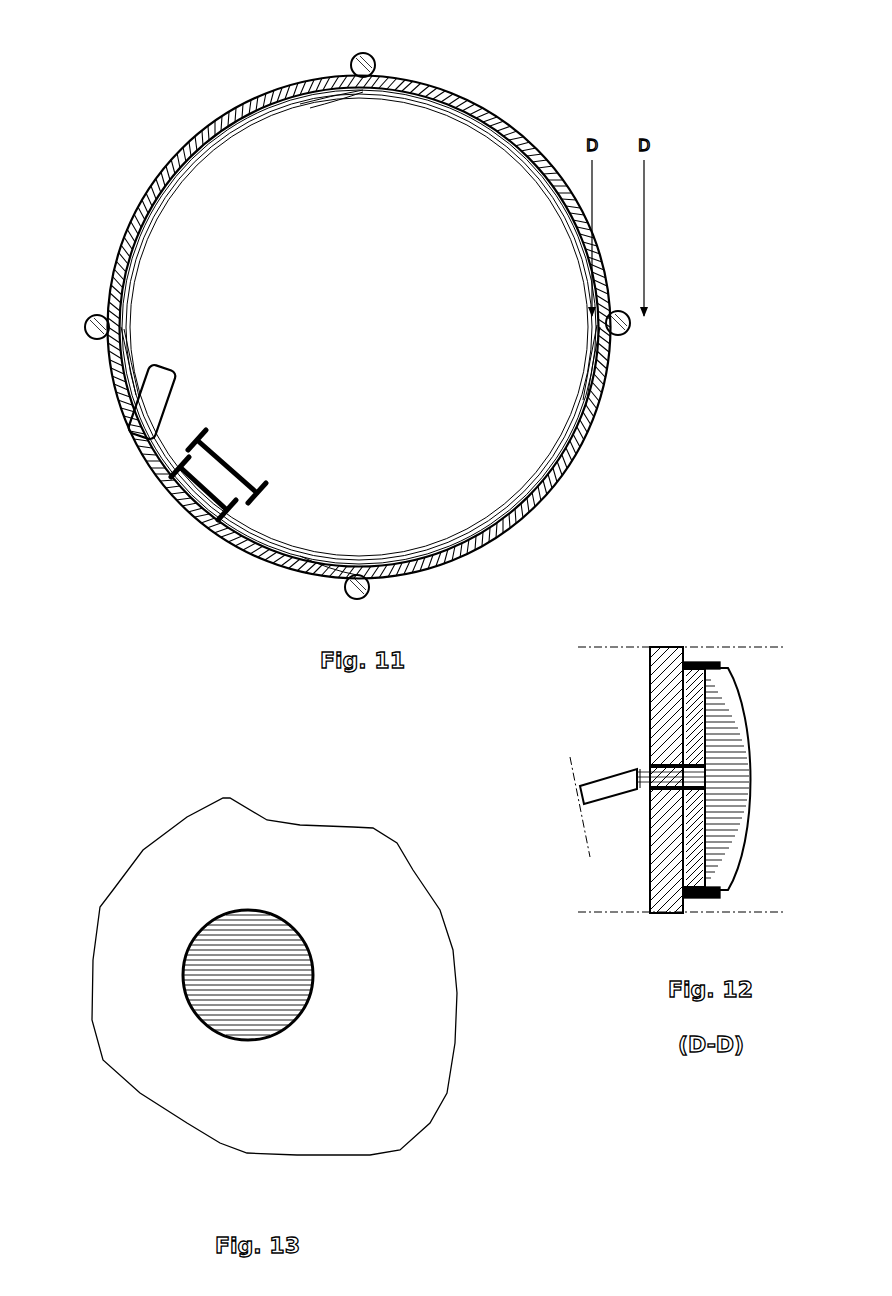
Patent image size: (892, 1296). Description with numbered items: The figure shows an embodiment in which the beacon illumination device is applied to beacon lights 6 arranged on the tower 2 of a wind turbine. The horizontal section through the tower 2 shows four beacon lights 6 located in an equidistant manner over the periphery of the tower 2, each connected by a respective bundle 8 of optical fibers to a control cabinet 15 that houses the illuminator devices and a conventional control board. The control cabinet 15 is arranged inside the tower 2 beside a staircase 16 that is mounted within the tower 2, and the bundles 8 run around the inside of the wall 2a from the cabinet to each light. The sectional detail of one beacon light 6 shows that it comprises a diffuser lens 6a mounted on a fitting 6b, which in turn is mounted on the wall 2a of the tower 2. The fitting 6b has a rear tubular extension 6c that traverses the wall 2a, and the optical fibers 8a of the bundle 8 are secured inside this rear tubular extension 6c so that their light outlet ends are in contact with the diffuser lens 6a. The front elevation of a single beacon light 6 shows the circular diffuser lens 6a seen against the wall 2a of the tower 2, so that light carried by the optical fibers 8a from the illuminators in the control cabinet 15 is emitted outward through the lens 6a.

In FIG. 11, the tower 2 is at (532, 111).
In FIG. 11, the wall 2a is at (180, 147).
In FIG. 12, the wall 2a is at (650, 693).
In FIG. 13, the wall 2a is at (402, 1107).
In FIG. 11, the beacon light 6 is at (378, 60).
In FIG. 12, the beacon light 6 is at (768, 700).
In FIG. 13, the beacon light 6 is at (273, 907).
In FIG. 12, the diffuser lens 6a is at (737, 693).
In FIG. 13, the diffuser lens 6a is at (315, 978).
In FIG. 12, the fitting 6b is at (700, 648).
In FIG. 12, the rear tubular extension 6c is at (650, 758).
In FIG. 11, the bundle of optical fibers 8 is at (318, 105).
In FIG. 12, the bundle of optical fibers 8 is at (600, 783).
In FIG. 12, the optical fibers 8a is at (735, 778).
In FIG. 11, the control cabinet 15 is at (166, 386).
In FIG. 11, the staircase 16 is at (220, 457).